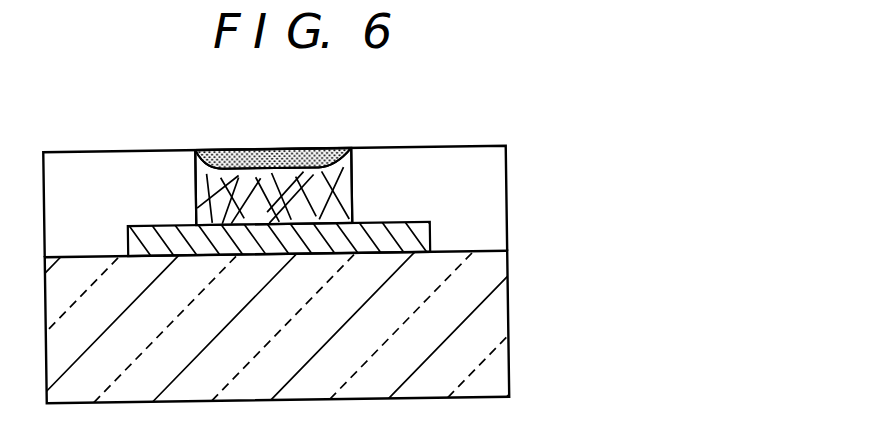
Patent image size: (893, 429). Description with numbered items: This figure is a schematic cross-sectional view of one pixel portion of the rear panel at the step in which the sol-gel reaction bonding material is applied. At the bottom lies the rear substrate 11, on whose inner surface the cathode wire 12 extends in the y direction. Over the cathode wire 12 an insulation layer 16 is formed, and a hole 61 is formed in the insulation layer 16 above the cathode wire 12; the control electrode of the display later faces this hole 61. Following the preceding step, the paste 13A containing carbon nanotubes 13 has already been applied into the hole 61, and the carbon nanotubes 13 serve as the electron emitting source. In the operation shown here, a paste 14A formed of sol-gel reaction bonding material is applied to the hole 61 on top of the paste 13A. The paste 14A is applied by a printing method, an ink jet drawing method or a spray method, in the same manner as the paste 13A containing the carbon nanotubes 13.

The rear substrate 11 is at (495, 322).
The cathode wire 12 is at (430, 242).
The carbon nanotubes 13 is at (314, 190).
The paste containing carbon nanotubes 13A is at (248, 155).
The paste formed of sol-gel reaction bonding material 14A is at (272, 149).
The insulation layer 16 is at (495, 183).
The hole 61 is at (353, 175).